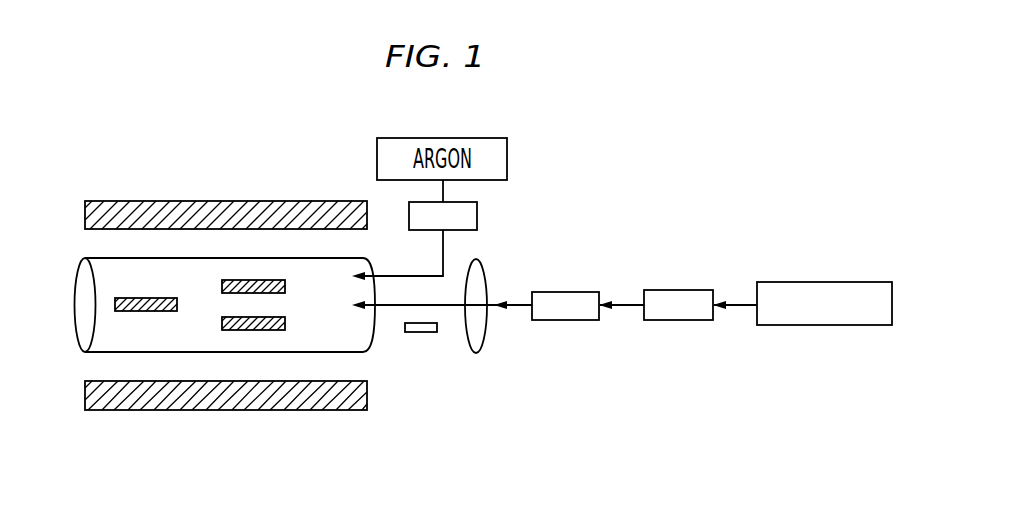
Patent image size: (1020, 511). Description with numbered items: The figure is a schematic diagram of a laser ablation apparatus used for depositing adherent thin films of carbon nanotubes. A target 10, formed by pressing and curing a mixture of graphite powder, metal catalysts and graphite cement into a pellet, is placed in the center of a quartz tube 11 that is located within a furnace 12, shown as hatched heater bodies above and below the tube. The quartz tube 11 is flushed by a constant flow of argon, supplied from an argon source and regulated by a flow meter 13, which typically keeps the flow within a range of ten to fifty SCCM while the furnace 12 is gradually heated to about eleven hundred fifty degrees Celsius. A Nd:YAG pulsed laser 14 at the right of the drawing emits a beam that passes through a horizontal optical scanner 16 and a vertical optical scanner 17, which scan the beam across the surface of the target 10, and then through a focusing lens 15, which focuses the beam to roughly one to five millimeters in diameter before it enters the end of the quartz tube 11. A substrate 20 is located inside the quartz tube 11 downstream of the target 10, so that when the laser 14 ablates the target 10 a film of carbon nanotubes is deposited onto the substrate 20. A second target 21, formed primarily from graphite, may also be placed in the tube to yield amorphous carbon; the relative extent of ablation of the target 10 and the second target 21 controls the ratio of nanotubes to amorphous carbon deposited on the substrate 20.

The target 10 is at (285, 284).
The quartz tube 11 is at (82, 349).
The furnace 12 is at (85, 229).
The flow meter 13 is at (477, 218).
The Nd:YAG pulsed laser 14 is at (830, 282).
The focusing lens 15 is at (485, 276).
The horizontal optical scanner 16 is at (713, 295).
The vertical optical scanner 17 is at (599, 296).
The substrate 20 is at (177, 300).
The second target 21 is at (285, 322).